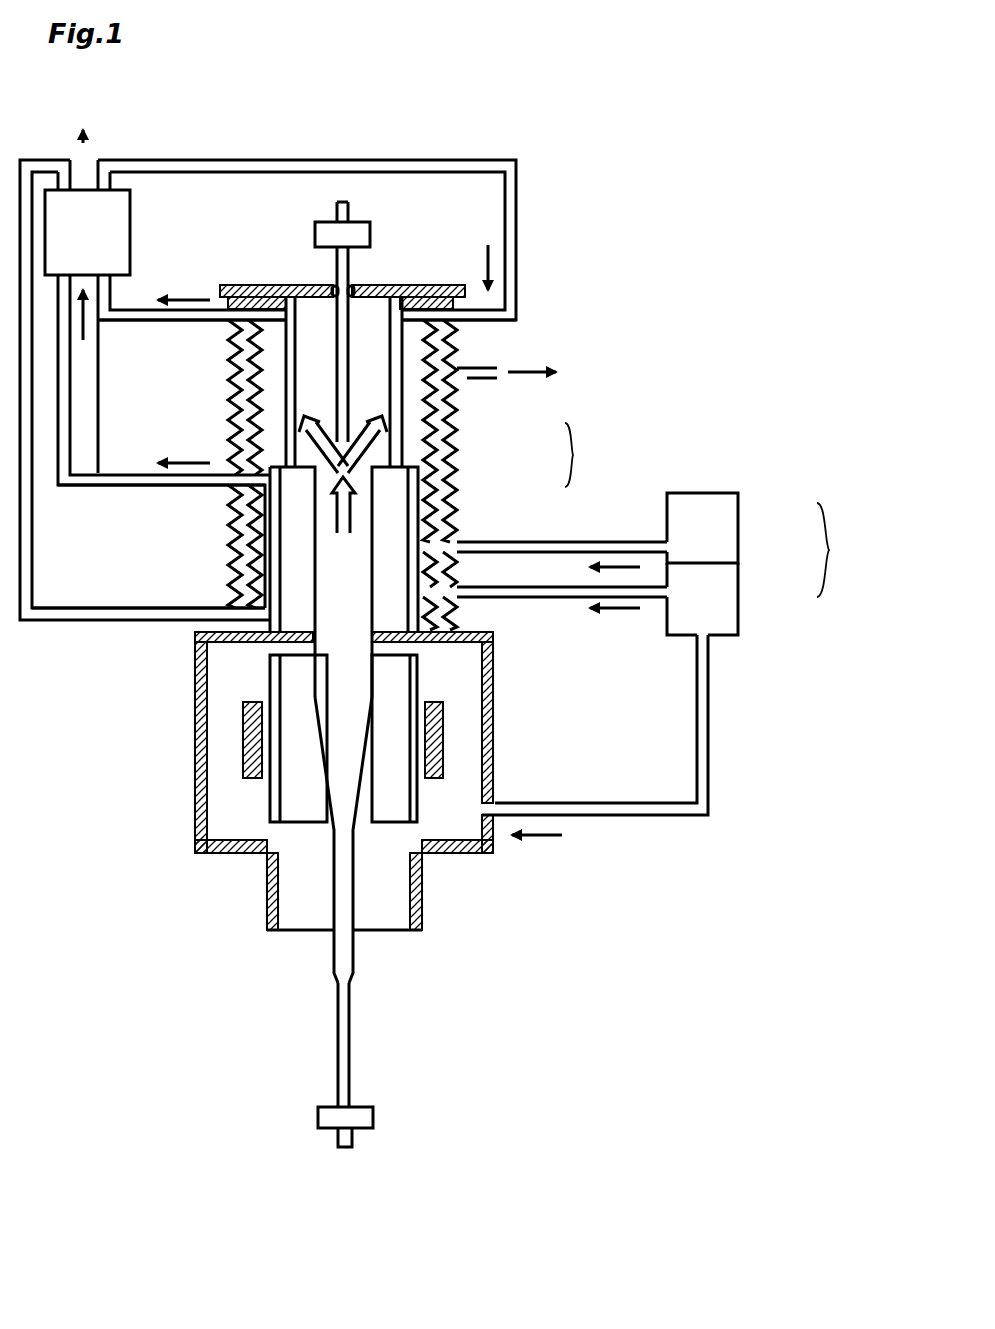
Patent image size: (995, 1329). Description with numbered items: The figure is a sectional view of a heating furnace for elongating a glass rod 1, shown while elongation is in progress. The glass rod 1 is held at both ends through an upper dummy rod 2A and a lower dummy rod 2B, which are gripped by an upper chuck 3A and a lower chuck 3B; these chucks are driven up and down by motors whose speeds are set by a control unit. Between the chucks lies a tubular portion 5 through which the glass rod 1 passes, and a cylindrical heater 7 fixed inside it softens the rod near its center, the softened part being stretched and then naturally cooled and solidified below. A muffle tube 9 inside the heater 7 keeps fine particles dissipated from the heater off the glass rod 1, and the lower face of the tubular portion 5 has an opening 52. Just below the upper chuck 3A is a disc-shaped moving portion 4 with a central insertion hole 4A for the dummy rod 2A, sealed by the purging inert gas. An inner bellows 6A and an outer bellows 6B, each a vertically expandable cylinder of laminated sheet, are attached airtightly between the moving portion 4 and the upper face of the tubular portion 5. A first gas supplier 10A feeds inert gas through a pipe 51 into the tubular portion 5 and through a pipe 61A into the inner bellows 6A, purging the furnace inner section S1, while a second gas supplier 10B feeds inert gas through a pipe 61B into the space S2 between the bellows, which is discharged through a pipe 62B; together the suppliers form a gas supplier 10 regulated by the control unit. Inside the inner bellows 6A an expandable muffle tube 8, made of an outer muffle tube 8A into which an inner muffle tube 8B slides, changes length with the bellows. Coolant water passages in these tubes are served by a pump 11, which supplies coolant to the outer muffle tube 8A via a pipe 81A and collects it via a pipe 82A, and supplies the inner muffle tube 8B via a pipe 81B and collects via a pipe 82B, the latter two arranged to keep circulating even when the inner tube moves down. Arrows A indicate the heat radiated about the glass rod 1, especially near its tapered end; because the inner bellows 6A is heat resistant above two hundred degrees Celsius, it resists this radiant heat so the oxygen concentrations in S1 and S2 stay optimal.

The glass rod 1 is at (327, 645).
The upper dummy rod 2A is at (344, 325).
The lower dummy rod 2B is at (348, 1040).
The upper chuck 3A is at (366, 240).
The lower chuck 3B is at (362, 1113).
The moving portion 4 is at (255, 285).
The insertion hole 4A is at (336, 285).
The tubular portion 5 is at (490, 648).
The inner bellows 6A is at (230, 413).
The outer bellows 6B is at (230, 527).
The heater 7 is at (262, 715).
The expandable muffle tube 8 is at (582, 455).
The outer muffle tube 8A is at (457, 490).
The inner muffle tube 8B is at (457, 440).
The muffle tube 9 is at (270, 798).
The gas supplier 10 is at (771, 564).
The first gas supplier 10A is at (727, 603).
The second gas supplier 10B is at (727, 542).
The pump 11 is at (118, 238).
The pipe 51 is at (503, 808).
The opening 52 is at (377, 913).
The pipe 61A is at (478, 595).
The pipe 61B is at (480, 548).
The pipe 62B is at (467, 378).
The pipe 81A is at (208, 605).
The pipe 81B is at (485, 327).
The pipe 82A is at (210, 488).
The pipe 82B is at (210, 328).
The arrows A is at (362, 433).
The furnace inner section S1 is at (313, 383).
The space S2 is at (230, 443).